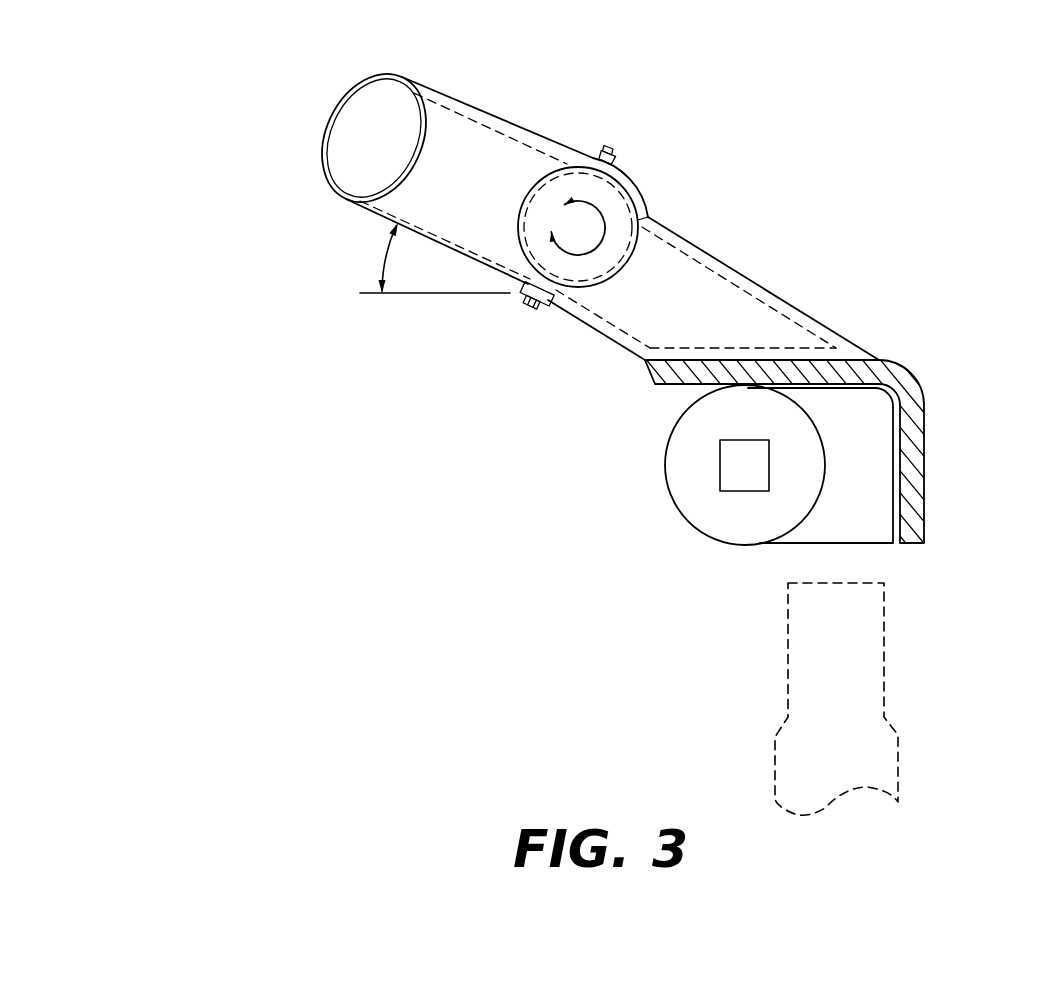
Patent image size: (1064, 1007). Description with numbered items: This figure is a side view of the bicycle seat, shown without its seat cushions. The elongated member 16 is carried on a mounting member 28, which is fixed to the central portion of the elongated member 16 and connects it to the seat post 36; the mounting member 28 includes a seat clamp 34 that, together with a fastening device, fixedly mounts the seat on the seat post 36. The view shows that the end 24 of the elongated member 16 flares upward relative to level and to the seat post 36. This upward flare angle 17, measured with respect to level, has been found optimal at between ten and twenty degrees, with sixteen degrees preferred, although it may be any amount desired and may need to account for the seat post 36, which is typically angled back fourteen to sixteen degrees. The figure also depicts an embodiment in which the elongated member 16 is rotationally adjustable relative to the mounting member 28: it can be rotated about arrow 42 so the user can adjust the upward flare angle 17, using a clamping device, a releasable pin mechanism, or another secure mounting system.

The elongated member 16 is at (578, 138).
The upward flare angle 17 is at (385, 265).
The first end portion 24 is at (464, 192).
The mounting member 28 is at (943, 272).
The seat clamp 34 is at (865, 464).
The seat post 36 is at (864, 658).
The arrow 42 is at (600, 213).